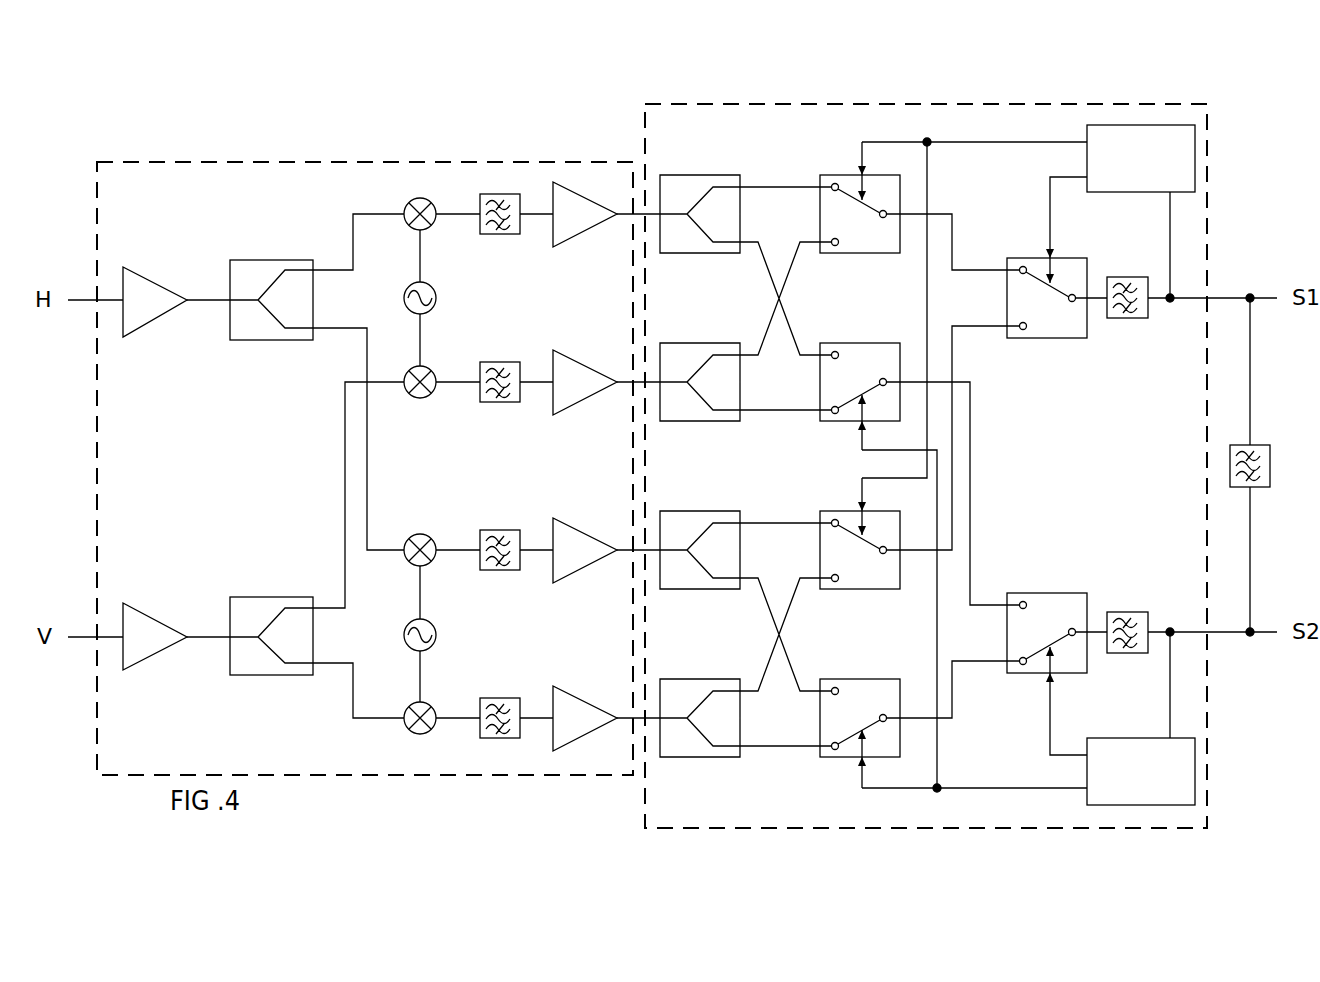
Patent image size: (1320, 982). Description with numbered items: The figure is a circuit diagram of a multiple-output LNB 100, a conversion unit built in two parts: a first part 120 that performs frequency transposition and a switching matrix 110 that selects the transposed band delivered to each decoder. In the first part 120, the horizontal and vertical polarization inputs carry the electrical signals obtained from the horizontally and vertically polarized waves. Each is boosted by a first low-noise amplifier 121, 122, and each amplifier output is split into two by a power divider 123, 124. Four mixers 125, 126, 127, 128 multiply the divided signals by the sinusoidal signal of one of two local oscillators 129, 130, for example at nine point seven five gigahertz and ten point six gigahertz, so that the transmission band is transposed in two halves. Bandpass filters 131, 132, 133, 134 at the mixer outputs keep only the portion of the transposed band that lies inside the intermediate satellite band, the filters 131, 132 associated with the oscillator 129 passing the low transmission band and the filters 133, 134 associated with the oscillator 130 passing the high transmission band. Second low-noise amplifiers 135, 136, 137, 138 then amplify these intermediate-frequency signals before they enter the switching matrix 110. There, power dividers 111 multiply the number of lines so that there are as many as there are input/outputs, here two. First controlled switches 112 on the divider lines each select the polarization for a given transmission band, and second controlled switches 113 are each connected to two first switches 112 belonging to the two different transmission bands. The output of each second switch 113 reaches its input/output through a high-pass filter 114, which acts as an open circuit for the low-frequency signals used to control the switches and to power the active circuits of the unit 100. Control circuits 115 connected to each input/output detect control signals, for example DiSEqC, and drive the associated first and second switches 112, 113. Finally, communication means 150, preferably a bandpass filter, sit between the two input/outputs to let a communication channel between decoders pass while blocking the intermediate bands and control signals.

The multiple-output LNB 100 is at (226, 127).
The switching matrix 110 is at (1207, 218).
The power dividers 111 is at (695, 175).
The first controlled switches 112 is at (830, 175).
The second controlled switches 113 is at (1048, 338).
The high-pass filter 114 is at (1127, 318).
The control circuits 115 is at (1120, 192).
The first part 120 is at (450, 162).
The first low-noise amplifier 121 is at (153, 277).
The first low-noise amplifier 122 is at (143, 613).
The power divider 123 is at (262, 260).
The power divider 124 is at (245, 597).
The mixer 125 is at (430, 228).
The mixer 126 is at (433, 369).
The mixer 127 is at (418, 534).
The mixer 128 is at (432, 703).
The local oscillator 129 is at (404, 300).
The local oscillator 130 is at (404, 636).
The bandpass filter 131 is at (500, 234).
The bandpass filter 132 is at (495, 362).
The bandpass filter 133 is at (500, 530).
The bandpass filter 134 is at (497, 698).
The second low-noise amplifier 135 is at (597, 227).
The second low-noise amplifier 136 is at (614, 330).
The second low-noise amplifier 137 is at (590, 527).
The second low-noise amplifier 138 is at (585, 700).
The communication means 150 is at (1268, 445).